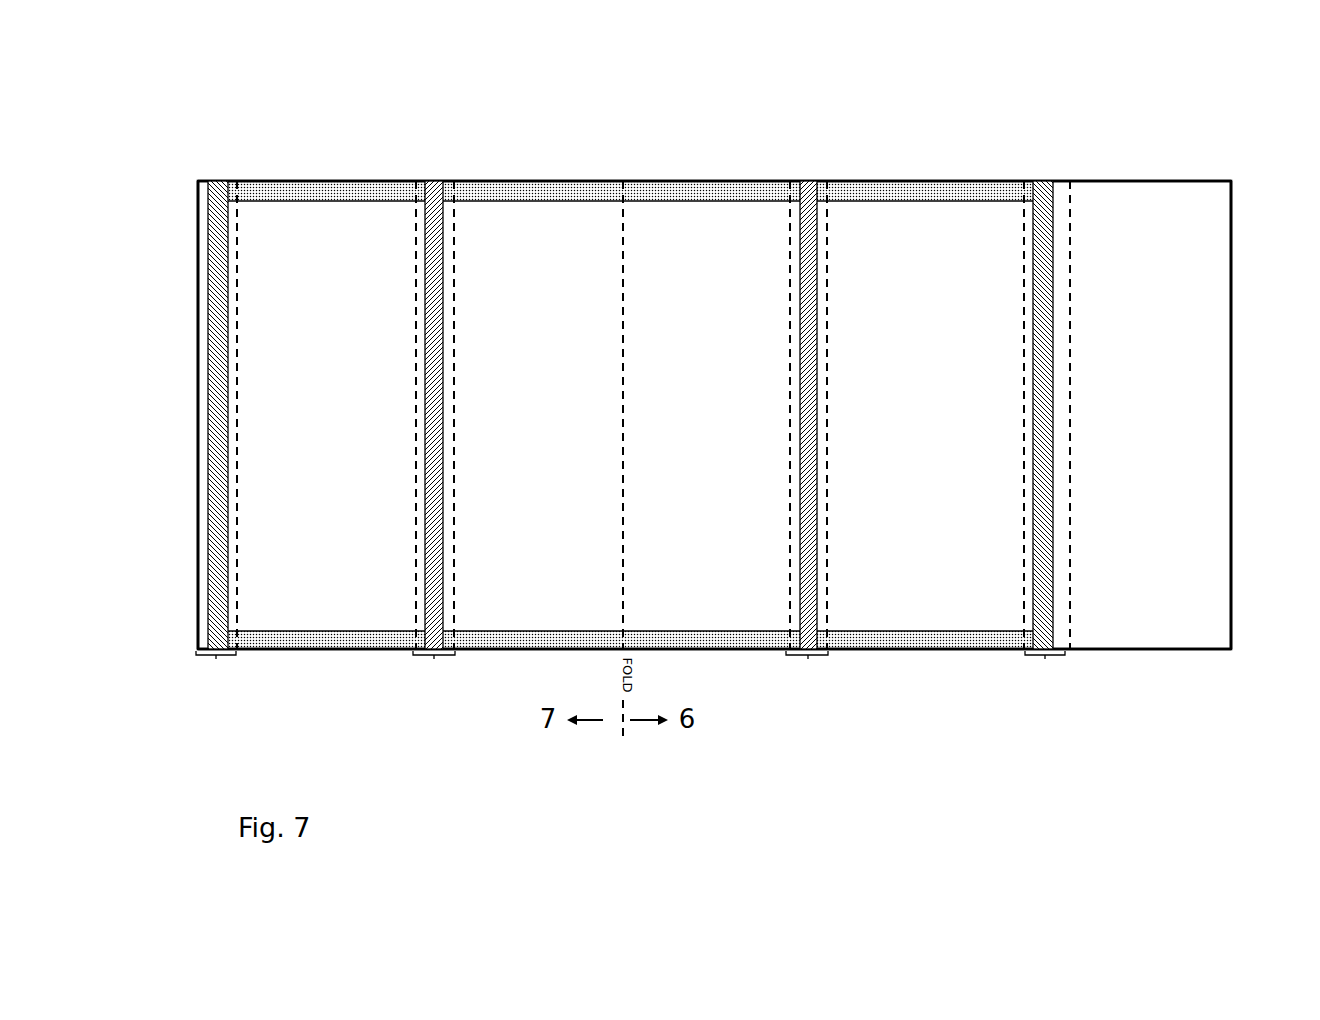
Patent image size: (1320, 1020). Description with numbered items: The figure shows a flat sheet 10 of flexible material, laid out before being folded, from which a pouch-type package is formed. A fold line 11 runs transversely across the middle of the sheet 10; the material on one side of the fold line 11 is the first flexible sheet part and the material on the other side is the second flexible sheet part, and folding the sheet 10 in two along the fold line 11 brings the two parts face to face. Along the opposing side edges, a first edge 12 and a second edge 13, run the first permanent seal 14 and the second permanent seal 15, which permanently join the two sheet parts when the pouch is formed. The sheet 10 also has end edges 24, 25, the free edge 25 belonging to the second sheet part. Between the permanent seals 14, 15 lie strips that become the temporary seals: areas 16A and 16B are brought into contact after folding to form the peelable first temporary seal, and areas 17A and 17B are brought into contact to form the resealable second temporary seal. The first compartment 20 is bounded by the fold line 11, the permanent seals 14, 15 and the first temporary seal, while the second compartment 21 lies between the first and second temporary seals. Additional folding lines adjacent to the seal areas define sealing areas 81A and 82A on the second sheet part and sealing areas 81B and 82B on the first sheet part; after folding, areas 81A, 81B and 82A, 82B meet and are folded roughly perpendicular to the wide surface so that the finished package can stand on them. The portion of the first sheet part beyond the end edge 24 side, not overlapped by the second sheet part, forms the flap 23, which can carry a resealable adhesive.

The sheet 10 is at (198, 112).
The fold line 11 is at (628, 203).
The first edge 12 is at (873, 181).
The second edge 13 is at (900, 650).
The first permanent seal 14 is at (928, 195).
The second permanent seal 15 is at (997, 640).
The first temporary seal area 16A is at (447, 183).
The first temporary seal area 16B is at (827, 203).
The second temporary seal area 17A is at (228, 183).
The second temporary seal area 17B is at (1043, 202).
The first compartment 20 is at (513, 437).
The second compartment 21 is at (307, 437).
The flap 23 is at (1173, 202).
The end edge 24 is at (1233, 395).
The free edge 25 is at (197, 368).
The sealing area 81A is at (217, 434).
The sealing area 81B is at (1045, 434).
The sealing area 82A is at (434, 434).
The sealing area 82B is at (807, 434).